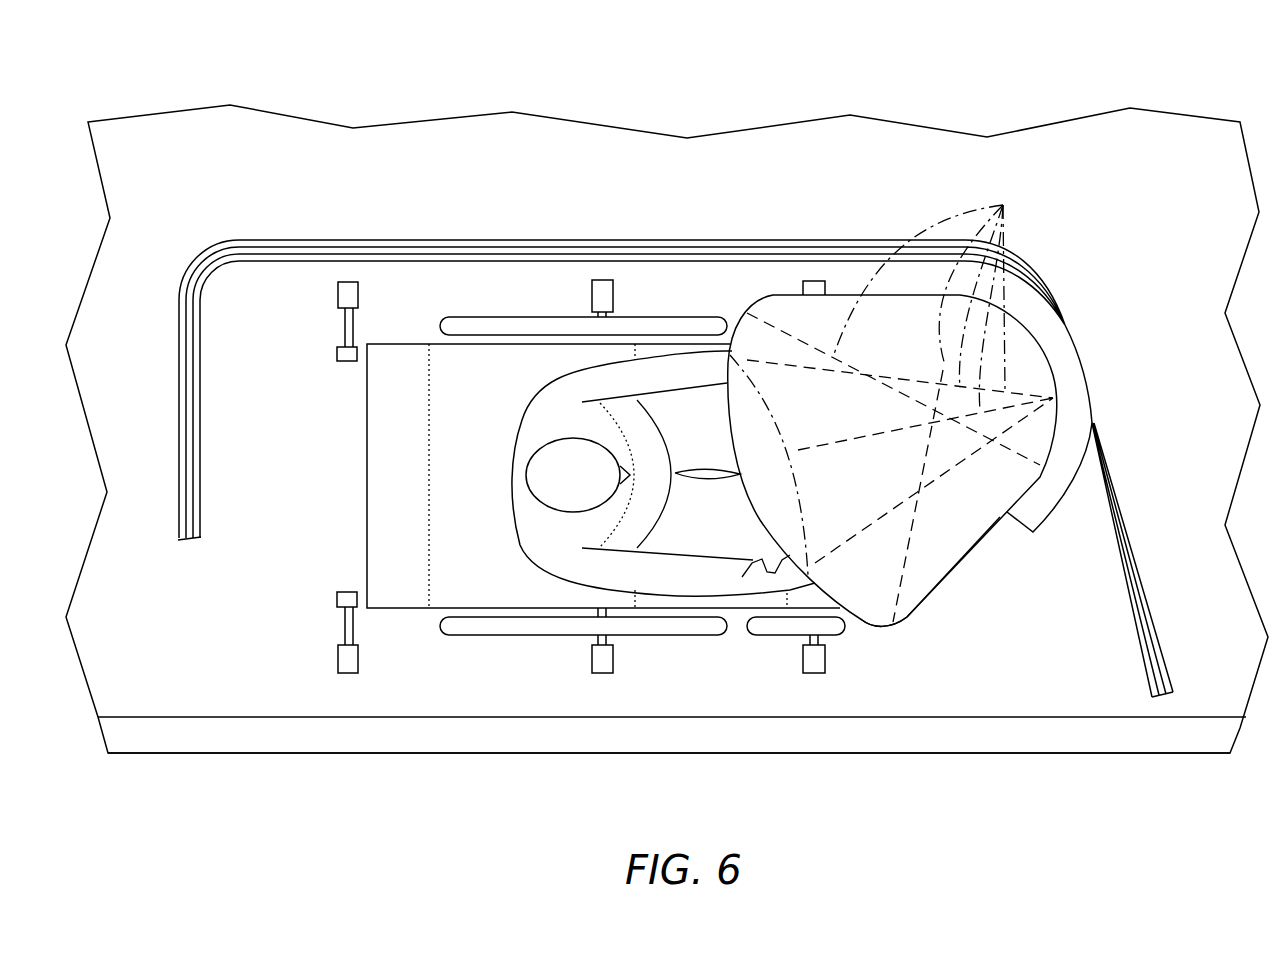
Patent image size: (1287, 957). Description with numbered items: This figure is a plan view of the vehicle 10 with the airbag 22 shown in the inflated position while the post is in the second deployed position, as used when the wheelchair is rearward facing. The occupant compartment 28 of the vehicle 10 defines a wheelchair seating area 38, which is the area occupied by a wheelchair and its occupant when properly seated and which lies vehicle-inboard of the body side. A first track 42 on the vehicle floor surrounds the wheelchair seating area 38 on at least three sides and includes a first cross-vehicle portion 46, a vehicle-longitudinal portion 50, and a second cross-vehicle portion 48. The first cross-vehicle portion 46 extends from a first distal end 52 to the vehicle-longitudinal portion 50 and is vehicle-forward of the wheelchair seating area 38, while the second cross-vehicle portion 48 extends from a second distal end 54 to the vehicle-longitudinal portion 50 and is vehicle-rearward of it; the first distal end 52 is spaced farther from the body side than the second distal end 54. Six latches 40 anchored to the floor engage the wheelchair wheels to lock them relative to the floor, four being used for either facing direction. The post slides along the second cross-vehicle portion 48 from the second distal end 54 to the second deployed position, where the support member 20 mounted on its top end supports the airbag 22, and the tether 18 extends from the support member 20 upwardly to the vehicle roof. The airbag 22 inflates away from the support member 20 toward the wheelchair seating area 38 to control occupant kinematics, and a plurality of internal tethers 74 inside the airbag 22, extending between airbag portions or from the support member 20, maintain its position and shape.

The vehicle 10 is at (1183, 88).
The occupant compartment 28 is at (913, 195).
The first track 42 is at (673, 428).
The first cross-vehicle portion 46 is at (178, 358).
The vehicle-longitudinal portion 50 is at (480, 238).
The second cross-vehicle portion 48 is at (1118, 510).
The first distal end 52 is at (193, 545).
The second distal end 54 is at (1173, 695).
The latches 40 is at (348, 283).
The wheelchair seating area 38 is at (677, 352).
The tether 18 is at (1057, 345).
The support member 20 is at (1075, 397).
The airbag 22 is at (944, 594).
The internal tethers 74 is at (1003, 205).